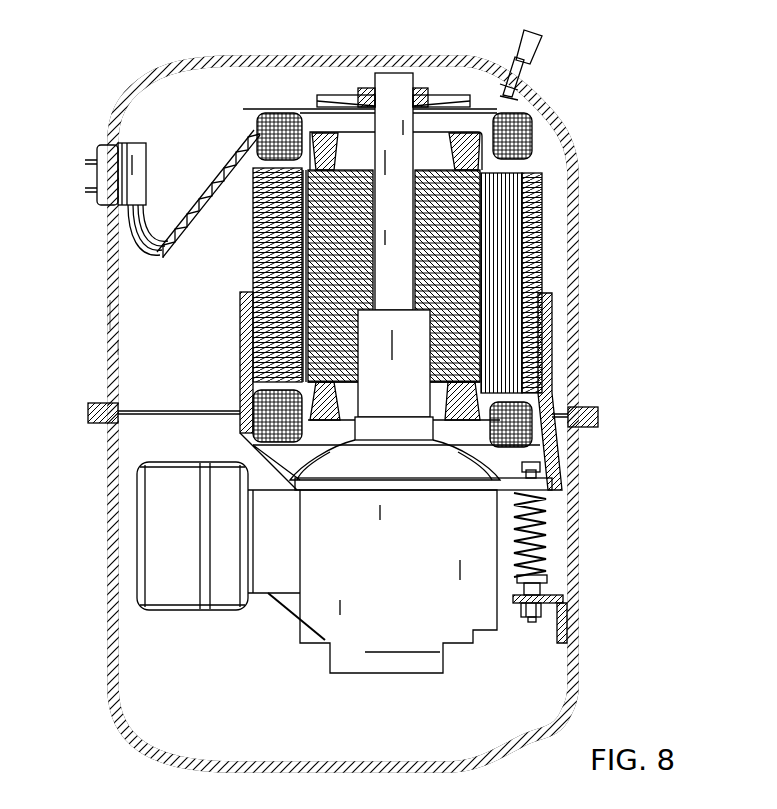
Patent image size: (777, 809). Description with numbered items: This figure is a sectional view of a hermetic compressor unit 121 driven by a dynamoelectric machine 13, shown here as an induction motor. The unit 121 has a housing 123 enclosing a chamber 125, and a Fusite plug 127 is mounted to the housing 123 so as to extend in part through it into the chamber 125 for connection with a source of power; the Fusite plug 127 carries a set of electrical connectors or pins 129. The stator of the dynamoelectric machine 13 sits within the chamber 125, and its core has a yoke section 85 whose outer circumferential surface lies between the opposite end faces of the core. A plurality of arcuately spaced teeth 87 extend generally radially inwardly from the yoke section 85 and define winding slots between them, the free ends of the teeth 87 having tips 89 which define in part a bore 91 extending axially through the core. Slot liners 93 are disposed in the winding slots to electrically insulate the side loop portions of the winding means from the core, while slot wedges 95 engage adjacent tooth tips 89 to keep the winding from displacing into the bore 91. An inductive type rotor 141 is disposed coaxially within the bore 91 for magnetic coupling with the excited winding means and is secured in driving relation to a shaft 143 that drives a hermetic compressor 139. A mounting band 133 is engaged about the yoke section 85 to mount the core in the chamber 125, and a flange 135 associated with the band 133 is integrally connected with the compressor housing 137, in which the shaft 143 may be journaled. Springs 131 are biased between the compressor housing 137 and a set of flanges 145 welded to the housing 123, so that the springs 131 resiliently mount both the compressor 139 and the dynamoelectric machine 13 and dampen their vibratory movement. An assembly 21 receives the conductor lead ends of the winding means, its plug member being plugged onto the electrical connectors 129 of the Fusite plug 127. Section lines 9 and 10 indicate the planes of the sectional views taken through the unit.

The hermetic compressor unit 121 is at (566, 96).
The housing 123 is at (108, 313).
The chamber 125 is at (133, 348).
The Fusite plug 127 is at (98, 213).
The electrical connectors 129 is at (87, 163).
The assembly 21 is at (178, 264).
The dynamoelectric machine 13 is at (240, 346).
The yoke section 85 is at (260, 273).
The teeth 87 is at (262, 248).
The tips 89 is at (262, 228).
The bore 91 is at (262, 207).
The slot liners 93 is at (540, 199).
The slot wedges 95 is at (523, 238).
The rotor 141 is at (470, 263).
The shaft 143 is at (392, 92).
The mounting band 133 is at (553, 300).
The flange 135 is at (557, 443).
The springs 131 is at (540, 534).
The flanges 145 is at (552, 603).
The hermetic compressor 139 is at (403, 562).
The compressor housing 137 is at (482, 130).
The section line 9- 9 is at (82, 135).
The section line 10- 10 is at (198, 136).